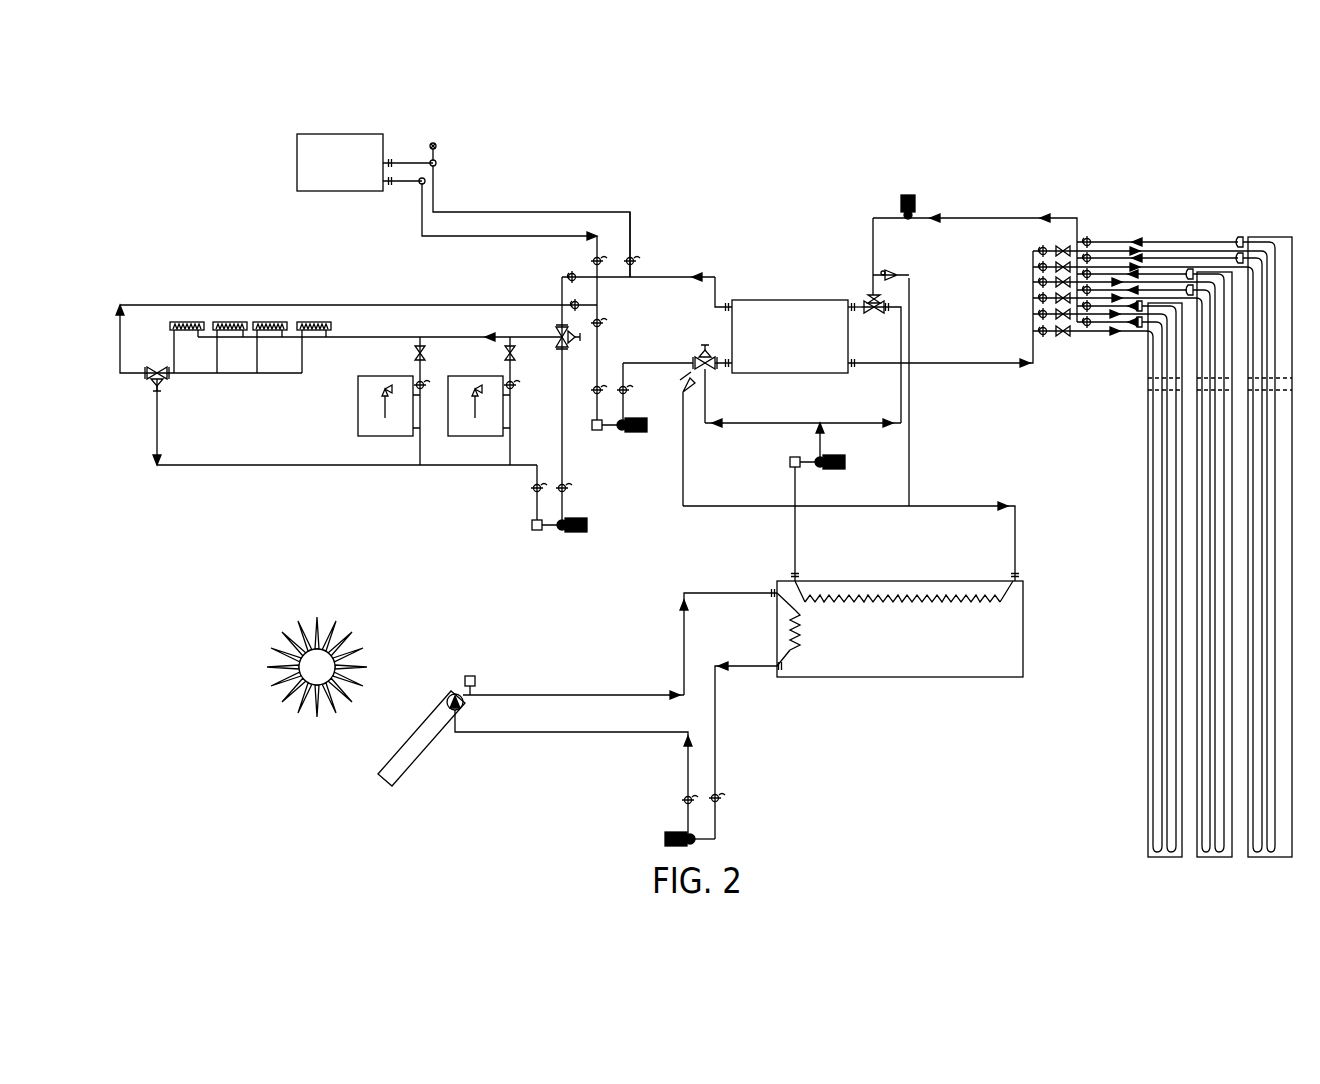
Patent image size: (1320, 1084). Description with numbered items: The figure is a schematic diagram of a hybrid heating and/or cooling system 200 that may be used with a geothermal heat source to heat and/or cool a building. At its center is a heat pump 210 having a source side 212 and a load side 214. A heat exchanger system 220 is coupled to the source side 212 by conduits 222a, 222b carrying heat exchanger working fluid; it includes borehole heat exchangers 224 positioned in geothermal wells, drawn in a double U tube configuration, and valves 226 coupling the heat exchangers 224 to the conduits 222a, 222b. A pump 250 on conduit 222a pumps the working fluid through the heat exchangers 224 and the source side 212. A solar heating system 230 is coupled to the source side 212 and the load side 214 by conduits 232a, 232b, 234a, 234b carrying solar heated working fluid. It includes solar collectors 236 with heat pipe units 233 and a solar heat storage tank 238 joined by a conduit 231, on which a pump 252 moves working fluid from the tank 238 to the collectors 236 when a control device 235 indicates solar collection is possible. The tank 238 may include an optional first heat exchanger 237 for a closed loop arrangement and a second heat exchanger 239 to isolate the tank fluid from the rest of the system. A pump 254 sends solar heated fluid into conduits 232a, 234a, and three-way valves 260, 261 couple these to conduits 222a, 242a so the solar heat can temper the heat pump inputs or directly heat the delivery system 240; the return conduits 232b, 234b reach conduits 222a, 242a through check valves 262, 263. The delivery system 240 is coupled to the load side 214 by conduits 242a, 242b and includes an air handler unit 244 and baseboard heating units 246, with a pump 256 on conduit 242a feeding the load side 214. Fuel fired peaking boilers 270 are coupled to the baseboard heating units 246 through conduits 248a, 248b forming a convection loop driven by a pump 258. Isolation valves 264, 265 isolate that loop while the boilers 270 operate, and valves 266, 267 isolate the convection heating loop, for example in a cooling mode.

The hybrid heating and/or cooling system 200 is at (682, 154).
The heat pump 210 is at (792, 300).
The source side 212 is at (845, 302).
The load side 214 is at (736, 306).
The heat exchanger system 220 is at (1261, 193).
The conduit 222a is at (974, 217).
The conduit 222b is at (974, 366).
The borehole heat exchangers 224 is at (1148, 690).
The valves 226 is at (1063, 344).
The solar heating system 230 is at (294, 777).
The conduit 231 is at (562, 736).
The conduit 232a is at (862, 430).
The conduit 232b is at (912, 444).
The heat pipe units 233 is at (446, 697).
The conduit 234a is at (740, 430).
The conduit 234b is at (740, 512).
The control device 235 is at (471, 676).
The solar collectors 236 is at (408, 770).
The first heat exchanger 237 is at (800, 640).
The solar heat storage tank 238 is at (933, 680).
The second heat exchanger 239 is at (888, 596).
The delivery system 240 is at (150, 188).
The conduit 242a is at (634, 362).
The conduit 242b is at (670, 274).
The air handler unit 244 is at (297, 148).
The baseboard heating units 246 is at (194, 320).
The conduit 248a is at (340, 470).
The conduit 248b is at (340, 345).
The pump 250 is at (900, 202).
The pump 252 is at (665, 837).
The pump 254 is at (832, 470).
The pump 256 is at (633, 436).
The pump 258 is at (573, 536).
The three-way valve 260 is at (877, 316).
The three-way valve 261 is at (704, 355).
The check valve 262 is at (901, 274).
The check valve 263 is at (679, 381).
The isolation valve 264 is at (558, 348).
The isolation valve 265 is at (168, 381).
The valve 266 is at (566, 274).
The valve 267 is at (570, 302).
The peaking boilers 270 is at (358, 408).